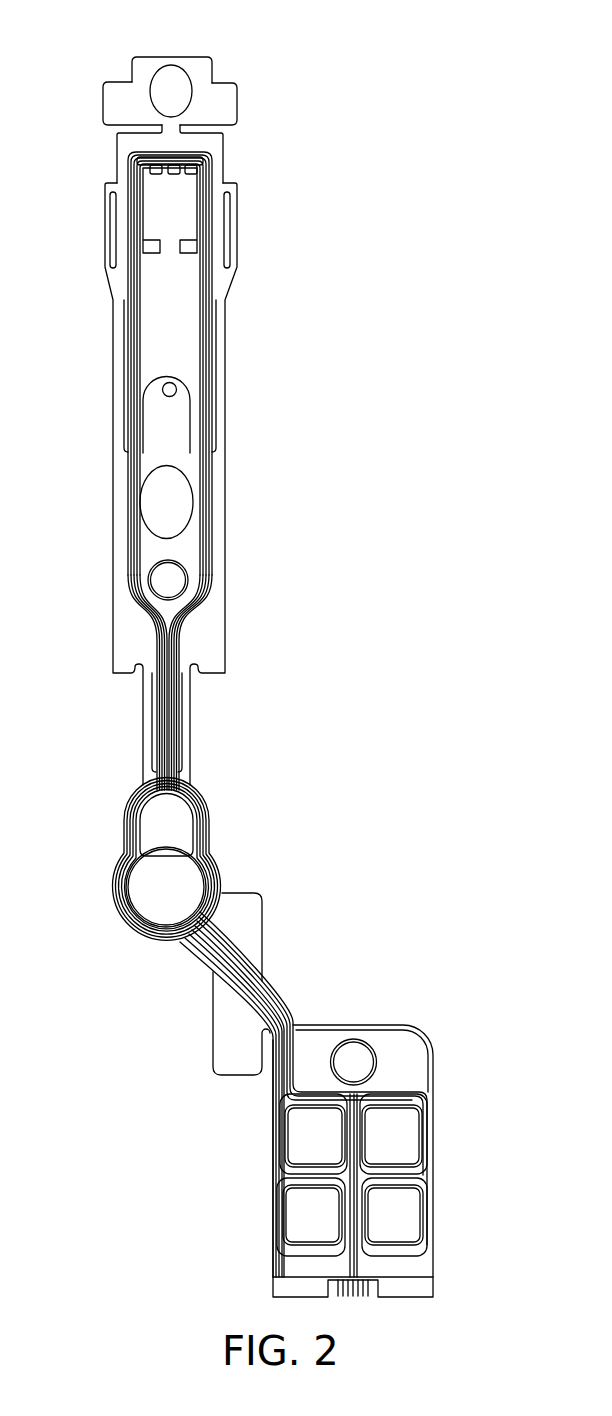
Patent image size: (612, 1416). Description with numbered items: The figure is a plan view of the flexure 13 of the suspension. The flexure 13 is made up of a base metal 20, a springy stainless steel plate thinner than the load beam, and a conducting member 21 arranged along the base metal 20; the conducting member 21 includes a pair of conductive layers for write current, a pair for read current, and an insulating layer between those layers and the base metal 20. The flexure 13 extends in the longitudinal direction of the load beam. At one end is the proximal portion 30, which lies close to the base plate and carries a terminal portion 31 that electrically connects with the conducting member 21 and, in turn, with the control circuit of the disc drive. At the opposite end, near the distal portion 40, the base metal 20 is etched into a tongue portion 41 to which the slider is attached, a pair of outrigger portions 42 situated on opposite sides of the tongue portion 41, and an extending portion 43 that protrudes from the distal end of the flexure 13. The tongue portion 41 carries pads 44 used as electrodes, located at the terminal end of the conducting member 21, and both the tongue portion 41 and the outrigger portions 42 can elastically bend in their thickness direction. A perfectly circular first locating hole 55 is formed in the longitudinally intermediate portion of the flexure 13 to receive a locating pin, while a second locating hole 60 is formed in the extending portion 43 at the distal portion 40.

The flexure 13 is at (238, 384).
The base metal 20 is at (178, 428).
The conducting member 21 is at (200, 464).
The proximal portion 30 is at (293, 1209).
The terminal portion 31 is at (407, 1200).
The distal portion 40 is at (262, 116).
The tongue portion 41 is at (178, 197).
The outrigger portions 42 is at (107, 230).
The extending portion 43 is at (197, 64).
The pads 44 is at (162, 152).
The first locating hole 55 is at (178, 579).
The second locating hole 60 is at (159, 90).